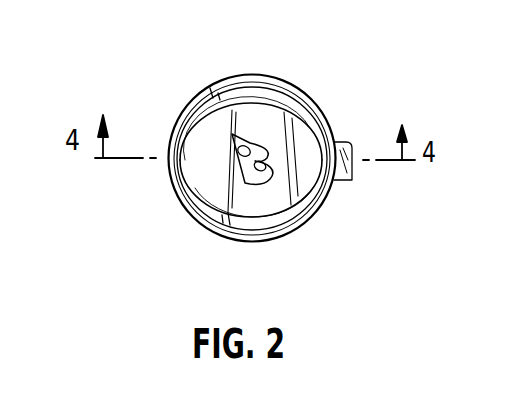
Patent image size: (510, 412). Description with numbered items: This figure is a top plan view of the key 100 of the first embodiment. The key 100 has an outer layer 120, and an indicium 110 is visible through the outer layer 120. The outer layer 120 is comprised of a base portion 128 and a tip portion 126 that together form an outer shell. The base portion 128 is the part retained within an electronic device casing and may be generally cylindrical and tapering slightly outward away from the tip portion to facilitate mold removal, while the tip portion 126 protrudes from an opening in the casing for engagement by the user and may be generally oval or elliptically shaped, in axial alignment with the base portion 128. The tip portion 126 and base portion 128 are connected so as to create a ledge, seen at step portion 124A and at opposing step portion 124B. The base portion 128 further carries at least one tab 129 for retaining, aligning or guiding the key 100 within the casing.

The key 100 is at (150, 90).
The indicium 110 is at (255, 142).
The outer layer 120 is at (202, 227).
The step portion 124A is at (272, 224).
The opposing step portion 124B is at (277, 97).
The tip portion 126 is at (305, 198).
The base portion 128 is at (195, 97).
The tab 129 is at (347, 177).